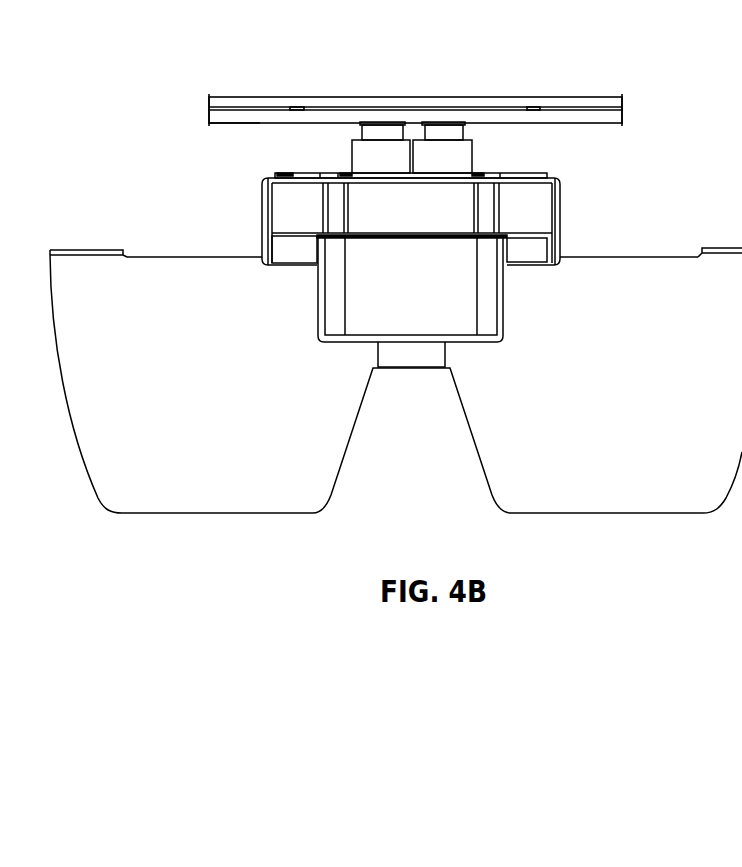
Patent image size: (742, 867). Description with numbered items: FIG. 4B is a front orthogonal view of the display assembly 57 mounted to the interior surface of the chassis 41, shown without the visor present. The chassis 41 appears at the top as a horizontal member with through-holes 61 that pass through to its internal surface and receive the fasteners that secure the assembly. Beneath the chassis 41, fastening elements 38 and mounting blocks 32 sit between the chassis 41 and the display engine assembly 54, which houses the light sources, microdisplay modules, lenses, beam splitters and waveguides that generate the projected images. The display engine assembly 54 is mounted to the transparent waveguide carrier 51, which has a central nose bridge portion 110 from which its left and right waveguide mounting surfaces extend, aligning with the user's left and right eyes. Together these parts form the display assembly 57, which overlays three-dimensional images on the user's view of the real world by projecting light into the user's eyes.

The chassis 41 is at (587, 97).
The through-holes 61 is at (232, 123).
The fastener block 38 is at (362, 133).
The mounting block 32 is at (352, 160).
The display engine assembly 54 is at (552, 213).
The central nose bridge portion 110 is at (407, 368).
The waveguide carrier 51 is at (335, 485).
The display assembly 57 is at (658, 168).